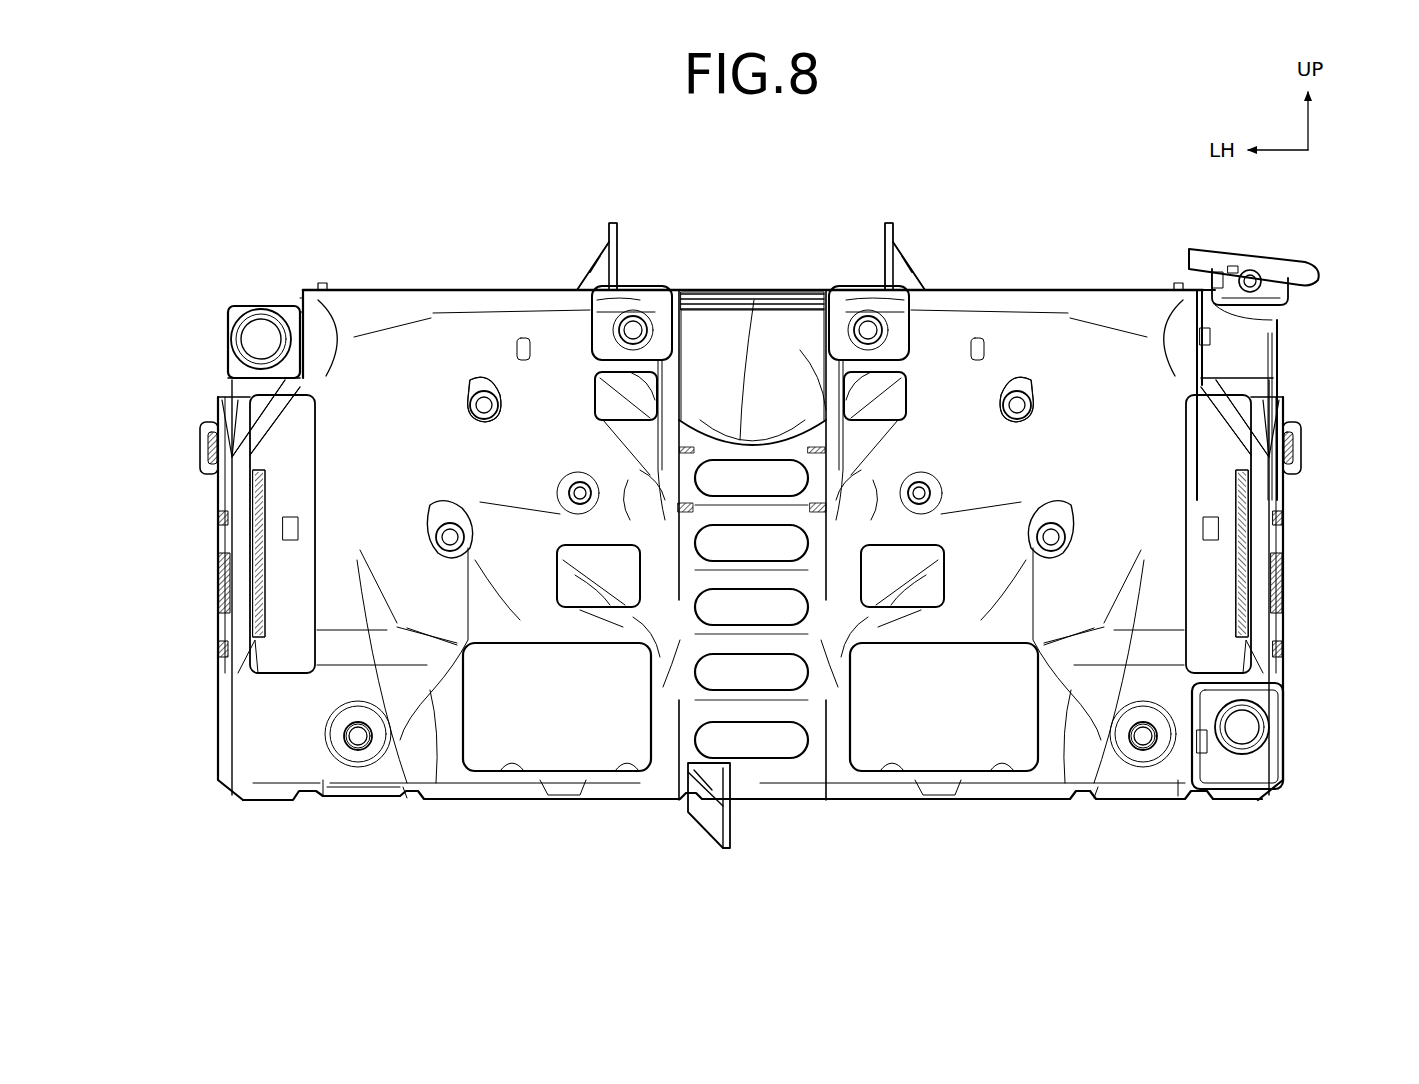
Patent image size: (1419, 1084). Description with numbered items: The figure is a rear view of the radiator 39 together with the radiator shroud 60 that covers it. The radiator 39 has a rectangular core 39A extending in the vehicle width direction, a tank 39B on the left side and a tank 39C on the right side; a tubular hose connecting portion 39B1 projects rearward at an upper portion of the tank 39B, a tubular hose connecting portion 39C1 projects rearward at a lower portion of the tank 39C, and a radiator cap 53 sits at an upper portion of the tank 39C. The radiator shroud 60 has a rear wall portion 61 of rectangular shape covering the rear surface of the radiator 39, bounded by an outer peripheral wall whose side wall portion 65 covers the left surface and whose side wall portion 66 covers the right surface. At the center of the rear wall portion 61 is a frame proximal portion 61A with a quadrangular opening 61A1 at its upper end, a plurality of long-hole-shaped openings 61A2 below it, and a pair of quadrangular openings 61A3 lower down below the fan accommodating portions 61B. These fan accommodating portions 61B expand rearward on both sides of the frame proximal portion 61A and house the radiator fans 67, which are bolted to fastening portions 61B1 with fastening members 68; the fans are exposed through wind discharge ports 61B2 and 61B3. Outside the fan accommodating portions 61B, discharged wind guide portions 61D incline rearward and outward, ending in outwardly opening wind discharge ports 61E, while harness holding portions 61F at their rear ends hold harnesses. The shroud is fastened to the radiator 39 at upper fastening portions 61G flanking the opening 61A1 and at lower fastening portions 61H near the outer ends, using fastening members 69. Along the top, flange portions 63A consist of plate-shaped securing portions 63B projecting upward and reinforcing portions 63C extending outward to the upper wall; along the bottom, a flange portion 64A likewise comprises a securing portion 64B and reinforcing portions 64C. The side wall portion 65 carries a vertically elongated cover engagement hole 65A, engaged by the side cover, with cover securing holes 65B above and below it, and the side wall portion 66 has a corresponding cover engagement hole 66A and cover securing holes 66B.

The radiator 39 is at (727, 284).
The core 39A is at (772, 335).
The tank on the left side 39B is at (290, 300).
The hose connecting portion 39B1 is at (240, 304).
The tank on the right side 39C is at (1258, 353).
The hose connecting portion 39C1 is at (1286, 746).
The radiator cap 53 is at (1288, 262).
The radiator shroud 60 is at (1041, 282).
The rear wall portion 61 is at (968, 335).
The frame proximal portion 61A is at (769, 640).
The opening 61A1 is at (766, 340).
The openings 61A2 is at (819, 500).
The openings 61A3 is at (520, 760).
The fan accommodating portions 61B is at (588, 457).
The fastening portions 61B1 is at (433, 517).
The wind discharge port 61B2 is at (685, 440).
The wind discharge port 61B3 is at (582, 598).
The discharged wind guide portions 61D is at (407, 795).
The wind discharge ports 61E is at (248, 578).
The harness holding portions 61F is at (248, 507).
The fastening portions 61G is at (645, 300).
The fastening portions 61H is at (364, 760).
The flange portions on the upper side 63A is at (598, 236).
The securing portions 63B is at (611, 224).
The reinforcing portions 63C is at (601, 273).
The flange portion on the lower side 64A is at (739, 852).
The securing portion 64B is at (725, 852).
The reinforcing portions 64C is at (692, 802).
The side wall portion on the left side 65 is at (203, 447).
The cover engagement hole 65A is at (219, 597).
The cover securing holes 65B is at (217, 518).
The side wall portion on the right side 66 is at (1298, 447).
The cover engagement hole 66A is at (1282, 597).
The cover securing holes 66B is at (1284, 518).
The radiator fans 67 is at (557, 543).
The fastening members 68 is at (470, 383).
The fastening members 69 is at (635, 318).